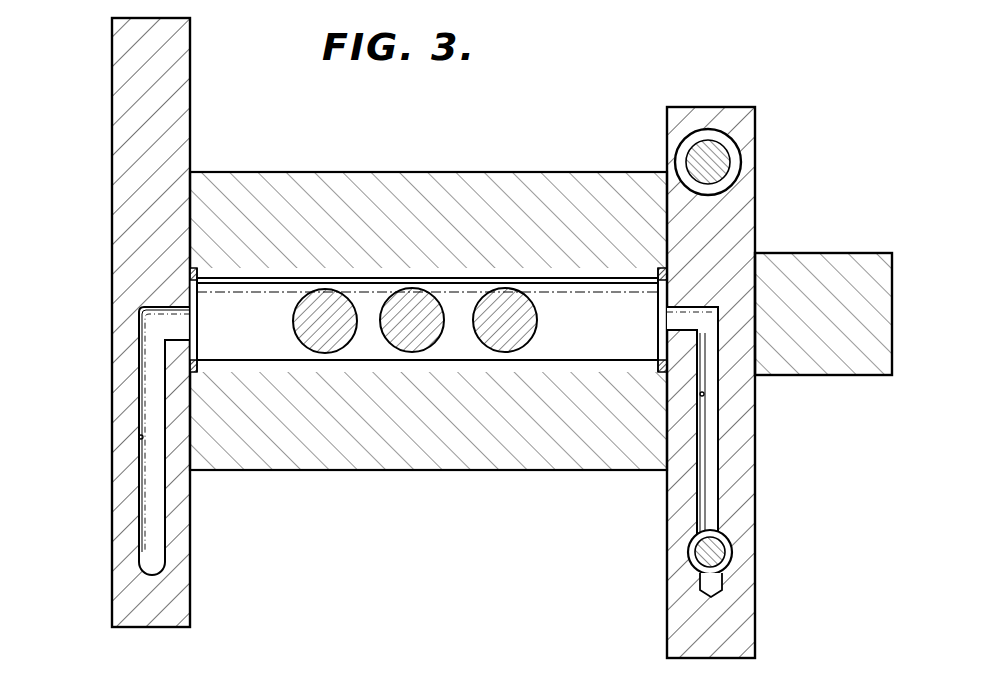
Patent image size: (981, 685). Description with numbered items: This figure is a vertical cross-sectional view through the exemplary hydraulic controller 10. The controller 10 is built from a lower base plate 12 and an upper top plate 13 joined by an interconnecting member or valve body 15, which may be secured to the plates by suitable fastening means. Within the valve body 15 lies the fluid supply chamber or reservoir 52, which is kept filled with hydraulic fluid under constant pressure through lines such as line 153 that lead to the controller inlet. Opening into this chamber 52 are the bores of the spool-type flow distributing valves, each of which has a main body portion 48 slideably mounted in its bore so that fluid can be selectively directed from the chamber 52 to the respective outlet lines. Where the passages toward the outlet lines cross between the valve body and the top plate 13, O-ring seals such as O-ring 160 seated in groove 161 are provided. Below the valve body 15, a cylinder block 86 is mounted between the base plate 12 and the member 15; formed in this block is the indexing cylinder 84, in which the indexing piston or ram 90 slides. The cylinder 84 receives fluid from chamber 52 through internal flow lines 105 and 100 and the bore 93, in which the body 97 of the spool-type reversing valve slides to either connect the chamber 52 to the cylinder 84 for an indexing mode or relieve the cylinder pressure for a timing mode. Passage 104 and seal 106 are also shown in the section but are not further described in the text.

The controller 10 is at (553, 138).
The lower base plate 12 is at (850, 252).
The upper top plate 13 is at (118, 497).
The valve body 15 is at (428, 172).
The main body portion 48 is at (323, 290).
The fluid supply chamber 52 is at (540, 360).
The indexing cylinder 84 is at (680, 150).
The cylinder block 86 is at (750, 628).
The indexing piston 90 is at (718, 158).
The bore 93 is at (700, 583).
The body 97 is at (716, 540).
The internal flow line 100 is at (699, 395).
The vertical channel 104 is at (752, 478).
The internal flow line 105 is at (692, 330).
The seal 106 is at (657, 272).
The line 153 is at (139, 437).
The O-ring 160 is at (196, 276).
The groove 161 is at (190, 348).